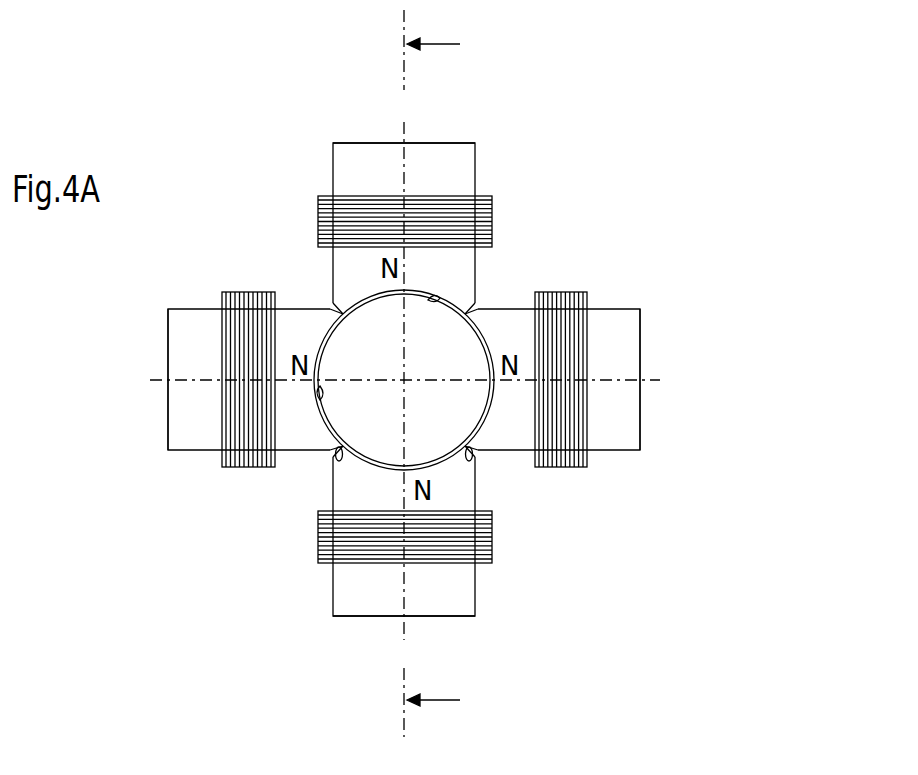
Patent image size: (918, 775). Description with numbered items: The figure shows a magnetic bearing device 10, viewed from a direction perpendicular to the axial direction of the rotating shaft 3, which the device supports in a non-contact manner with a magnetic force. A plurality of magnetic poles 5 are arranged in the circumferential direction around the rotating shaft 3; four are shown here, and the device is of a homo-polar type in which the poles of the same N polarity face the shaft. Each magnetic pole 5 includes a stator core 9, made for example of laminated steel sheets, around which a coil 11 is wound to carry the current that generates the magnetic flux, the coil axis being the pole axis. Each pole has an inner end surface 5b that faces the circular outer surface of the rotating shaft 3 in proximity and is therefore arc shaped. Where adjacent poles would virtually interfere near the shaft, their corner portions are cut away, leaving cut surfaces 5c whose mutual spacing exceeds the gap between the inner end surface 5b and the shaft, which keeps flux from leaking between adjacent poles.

The magnetic bearing device 10 is at (210, 156).
The rotating shaft 3 is at (412, 394).
The magnetic pole 5 is at (462, 173).
The inner end surface 5b is at (448, 296).
The cut surface 5c is at (510, 518).
The stator core 9 is at (168, 334).
The coil 11 is at (325, 215).